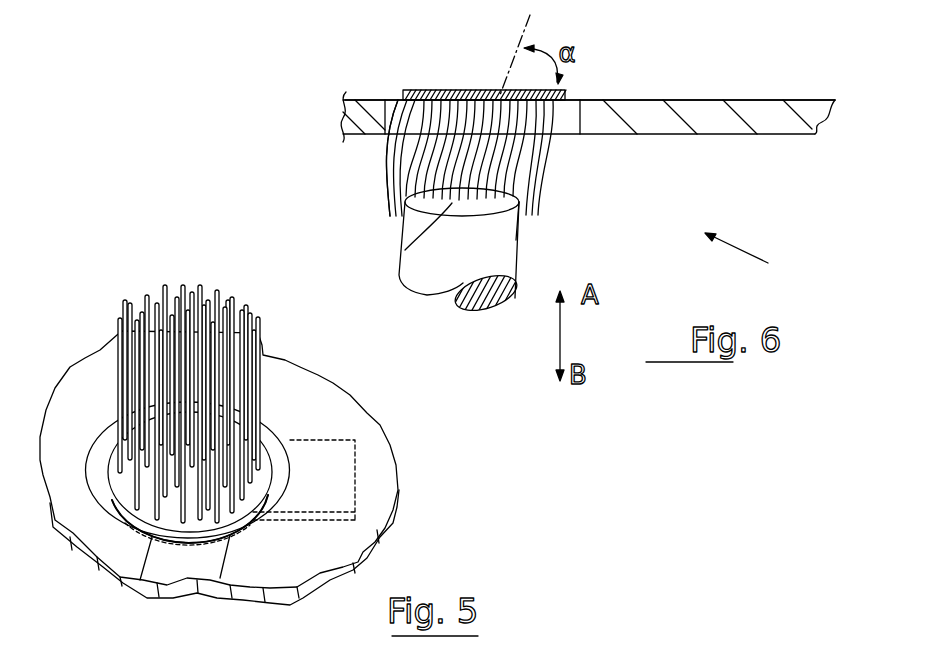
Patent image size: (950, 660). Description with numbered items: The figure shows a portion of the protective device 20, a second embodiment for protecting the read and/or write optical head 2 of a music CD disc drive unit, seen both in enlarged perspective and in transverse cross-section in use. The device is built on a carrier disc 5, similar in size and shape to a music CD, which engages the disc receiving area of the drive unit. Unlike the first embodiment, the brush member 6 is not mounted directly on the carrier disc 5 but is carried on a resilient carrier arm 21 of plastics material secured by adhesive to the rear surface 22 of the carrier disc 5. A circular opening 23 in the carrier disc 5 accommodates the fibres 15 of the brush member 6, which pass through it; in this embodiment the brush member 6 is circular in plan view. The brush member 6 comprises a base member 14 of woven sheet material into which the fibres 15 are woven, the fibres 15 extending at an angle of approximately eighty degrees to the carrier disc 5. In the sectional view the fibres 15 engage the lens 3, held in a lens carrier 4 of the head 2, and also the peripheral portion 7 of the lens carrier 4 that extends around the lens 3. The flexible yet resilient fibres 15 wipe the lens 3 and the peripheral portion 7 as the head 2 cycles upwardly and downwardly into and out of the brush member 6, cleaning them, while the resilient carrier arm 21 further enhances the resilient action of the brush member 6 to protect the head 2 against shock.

In FIG. 6, the read and/or write optical head 2 is at (410, 283).
In FIG. 6, the lens 3 is at (408, 249).
In FIG. 6, the lens carrier 4 is at (500, 260).
In FIG. 6, the carrier disc 5 is at (702, 117).
In FIG. 5, the carrier disc 5 is at (367, 427).
In FIG. 5, the brush member 6 is at (147, 372).
In FIG. 6, the peripheral portion 7 is at (522, 213).
In FIG. 6, the base member 14 is at (403, 150).
In FIG. 5, the base member 14 is at (227, 513).
In FIG. 6, the fibres 15 is at (543, 170).
In FIG. 5, the fibres 15 is at (132, 316).
In FIG. 6, the protective device 20 is at (760, 259).
In FIG. 5, the resilient carrier arm 21 is at (277, 465).
In FIG. 6, the rear surface 22 is at (742, 100).
In FIG. 6, the circular opening 23 is at (575, 125).
In FIG. 5, the circular opening 23 is at (287, 440).